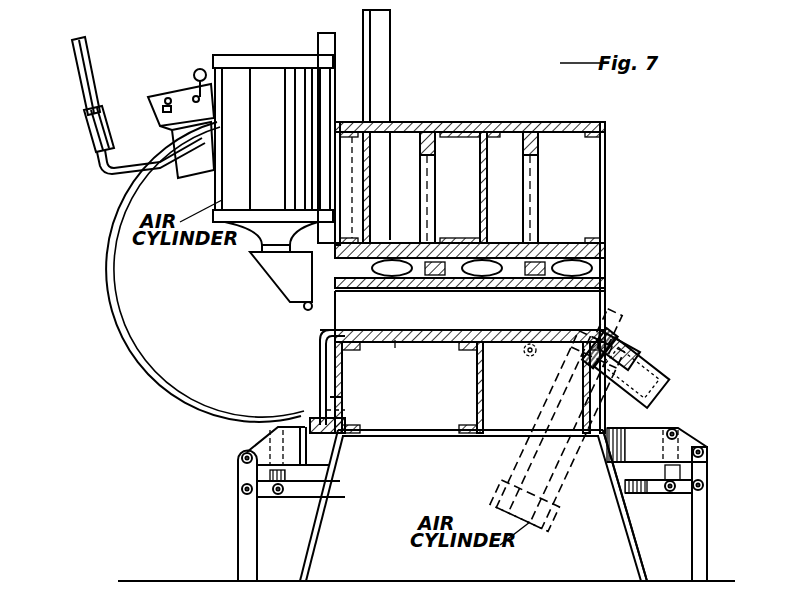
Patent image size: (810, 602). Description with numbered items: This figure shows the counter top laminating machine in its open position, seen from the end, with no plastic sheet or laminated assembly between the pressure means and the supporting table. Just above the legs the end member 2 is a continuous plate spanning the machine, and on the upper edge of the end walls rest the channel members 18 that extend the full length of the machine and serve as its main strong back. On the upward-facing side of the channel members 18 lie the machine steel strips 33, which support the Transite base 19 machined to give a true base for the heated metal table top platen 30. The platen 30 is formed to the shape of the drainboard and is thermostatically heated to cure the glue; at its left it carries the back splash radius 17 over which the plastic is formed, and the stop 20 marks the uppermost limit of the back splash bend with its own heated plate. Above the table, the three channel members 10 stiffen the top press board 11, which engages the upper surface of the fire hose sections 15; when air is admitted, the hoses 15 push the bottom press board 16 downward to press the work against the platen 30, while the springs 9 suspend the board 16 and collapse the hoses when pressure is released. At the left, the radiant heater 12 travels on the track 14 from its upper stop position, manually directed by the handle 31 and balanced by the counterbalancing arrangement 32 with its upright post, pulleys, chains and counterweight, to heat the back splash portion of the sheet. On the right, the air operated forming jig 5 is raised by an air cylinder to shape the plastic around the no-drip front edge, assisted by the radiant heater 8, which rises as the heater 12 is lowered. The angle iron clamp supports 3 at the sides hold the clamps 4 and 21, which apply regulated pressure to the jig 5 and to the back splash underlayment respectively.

The end member 2 is at (628, 517).
The angle iron clamp supports 3 is at (655, 432).
The clamp 4 is at (707, 510).
The air operated forming jig 5 is at (660, 392).
The radiant heater 8 is at (628, 358).
The springs 9 is at (425, 180).
The channel members 10 is at (372, 150).
The top press board 11 is at (605, 250).
The radiant heater 12 is at (183, 96).
The track 14 is at (113, 298).
The fire hose sections 15 is at (605, 270).
The bottom press board 16 is at (605, 288).
The back splash radius 17 is at (320, 337).
The channel members 18 is at (345, 397).
The Transite base 19 is at (397, 340).
The stop 20 is at (312, 420).
The clamp 21 is at (248, 522).
The heated metal table top platen 30 is at (487, 330).
The handle 31 is at (88, 95).
The counterbalancing arrangement 32 is at (380, 65).
The machine steel strips 33 is at (395, 316).